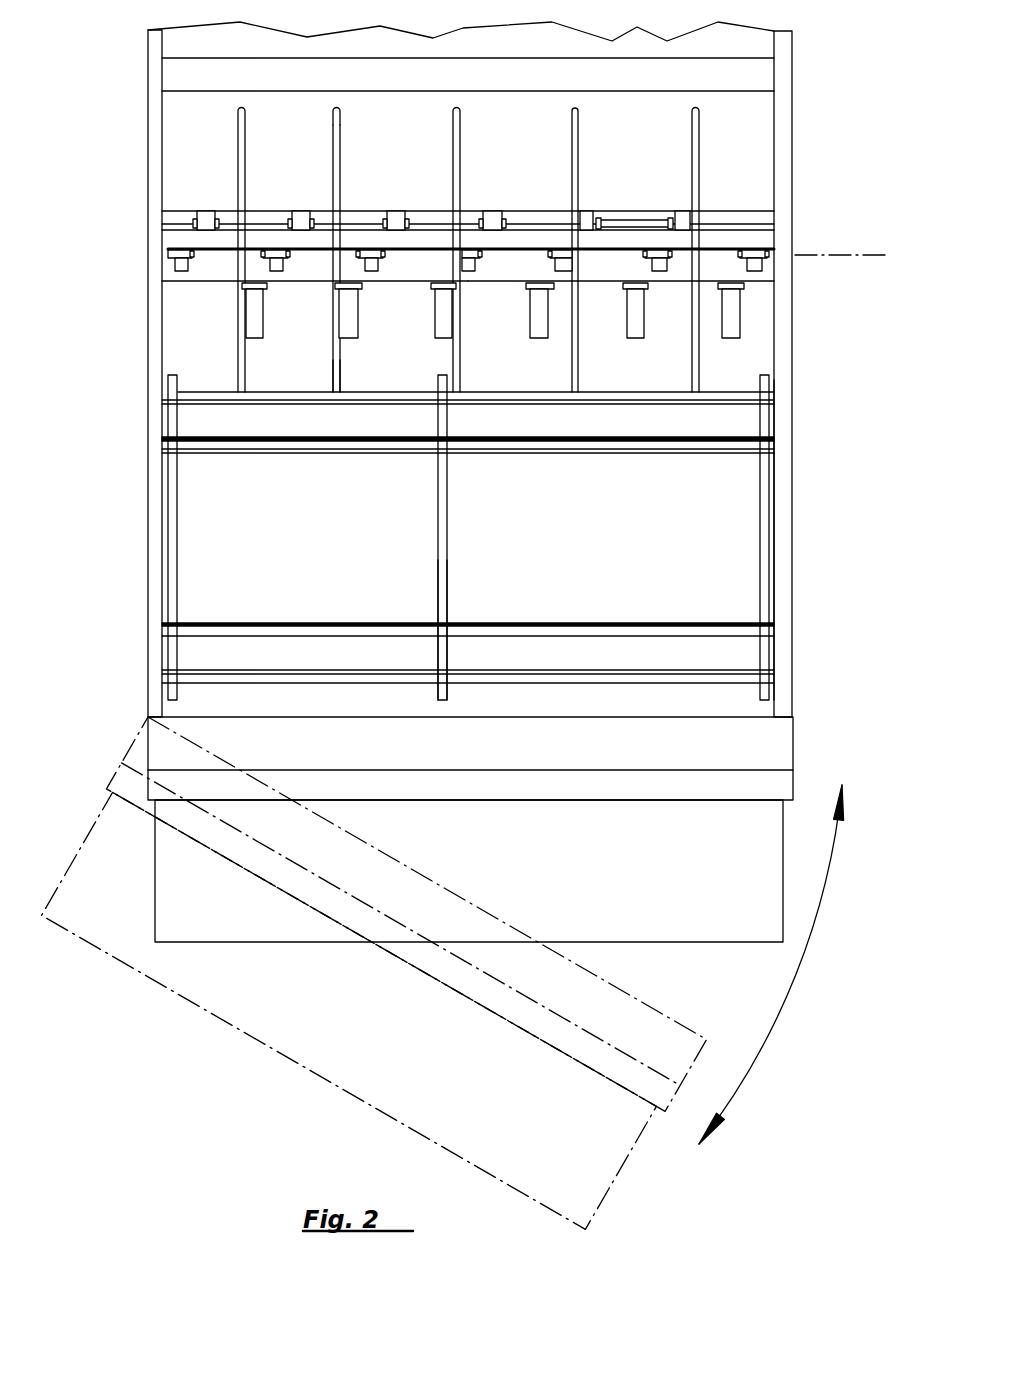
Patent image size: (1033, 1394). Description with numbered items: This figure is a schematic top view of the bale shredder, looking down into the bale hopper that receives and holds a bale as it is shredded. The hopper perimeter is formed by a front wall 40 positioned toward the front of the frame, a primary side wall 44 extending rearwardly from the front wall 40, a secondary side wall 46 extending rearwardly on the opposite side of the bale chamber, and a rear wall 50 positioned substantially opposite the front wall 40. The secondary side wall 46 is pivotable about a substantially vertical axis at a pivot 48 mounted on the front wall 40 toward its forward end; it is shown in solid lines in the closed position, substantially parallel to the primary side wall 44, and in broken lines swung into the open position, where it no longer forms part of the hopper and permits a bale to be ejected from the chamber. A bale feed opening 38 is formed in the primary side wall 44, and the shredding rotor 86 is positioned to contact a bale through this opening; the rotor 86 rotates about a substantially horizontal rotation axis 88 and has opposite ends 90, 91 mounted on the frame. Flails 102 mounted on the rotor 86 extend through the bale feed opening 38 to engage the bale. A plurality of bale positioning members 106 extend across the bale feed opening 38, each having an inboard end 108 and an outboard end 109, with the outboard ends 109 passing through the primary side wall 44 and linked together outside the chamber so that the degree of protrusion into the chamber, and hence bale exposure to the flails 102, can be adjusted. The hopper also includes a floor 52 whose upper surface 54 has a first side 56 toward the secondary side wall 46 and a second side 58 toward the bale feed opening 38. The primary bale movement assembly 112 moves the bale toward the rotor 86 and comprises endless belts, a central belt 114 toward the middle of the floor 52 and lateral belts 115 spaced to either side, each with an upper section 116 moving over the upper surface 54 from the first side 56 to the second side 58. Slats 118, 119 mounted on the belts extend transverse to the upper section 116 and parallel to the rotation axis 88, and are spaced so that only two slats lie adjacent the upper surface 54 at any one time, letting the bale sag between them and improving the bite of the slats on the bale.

The bale feed opening 38 is at (640, 210).
The front wall 40 is at (165, 530).
The primary side wall 44 is at (735, 36).
The secondary side wall 46 is at (648, 918).
The pivot 48 is at (145, 716).
The rear wall 50 is at (780, 490).
The floor 52 is at (712, 567).
The upper surface 54 is at (728, 596).
The first side 56 is at (195, 650).
The second side 58 is at (210, 415).
The shredding rotor 86 is at (742, 243).
The rotation axis 88 is at (810, 257).
The end of the rotor 90 is at (752, 283).
The end of the rotor 91 is at (193, 286).
The flails 102 is at (542, 327).
The bale positioning members 106 is at (337, 156).
The inboard end 108 is at (333, 372).
The outboard end 109 is at (336, 117).
The primary bale movement assembly 112 is at (697, 433).
The endless belt 114 is at (447, 530).
The endless belts 115 is at (763, 512).
The upper section 116 is at (455, 585).
The slat 118 is at (665, 448).
The slat 119 is at (378, 630).